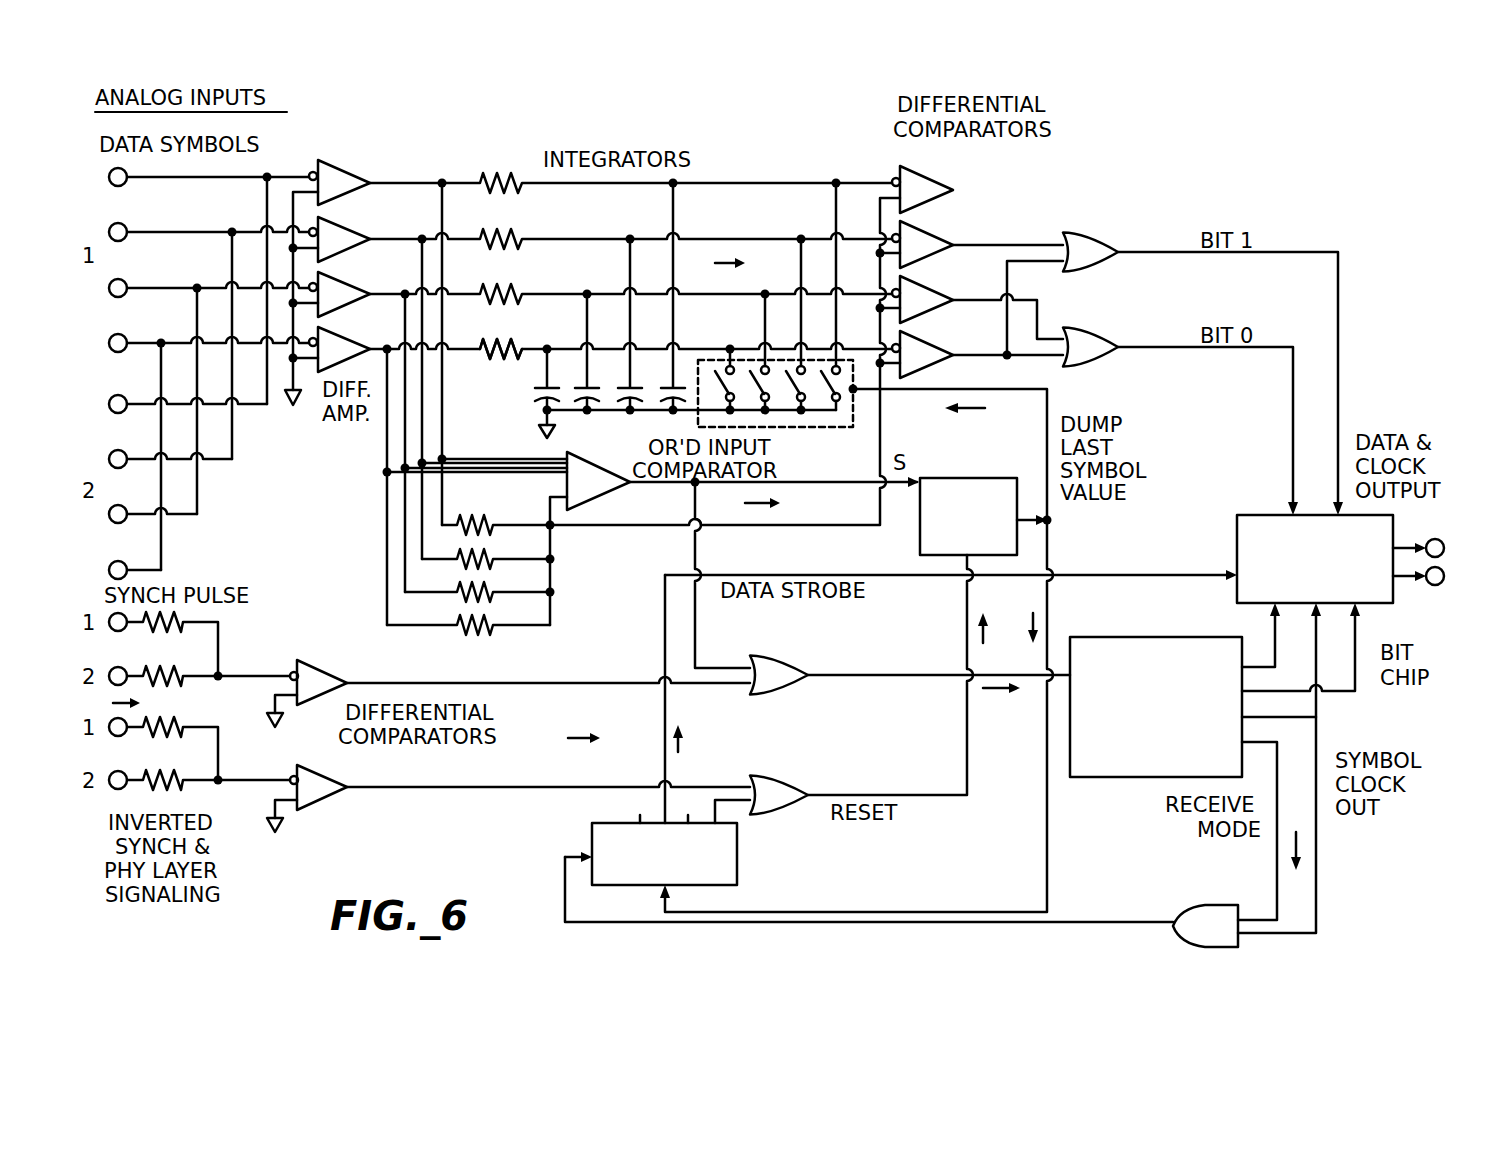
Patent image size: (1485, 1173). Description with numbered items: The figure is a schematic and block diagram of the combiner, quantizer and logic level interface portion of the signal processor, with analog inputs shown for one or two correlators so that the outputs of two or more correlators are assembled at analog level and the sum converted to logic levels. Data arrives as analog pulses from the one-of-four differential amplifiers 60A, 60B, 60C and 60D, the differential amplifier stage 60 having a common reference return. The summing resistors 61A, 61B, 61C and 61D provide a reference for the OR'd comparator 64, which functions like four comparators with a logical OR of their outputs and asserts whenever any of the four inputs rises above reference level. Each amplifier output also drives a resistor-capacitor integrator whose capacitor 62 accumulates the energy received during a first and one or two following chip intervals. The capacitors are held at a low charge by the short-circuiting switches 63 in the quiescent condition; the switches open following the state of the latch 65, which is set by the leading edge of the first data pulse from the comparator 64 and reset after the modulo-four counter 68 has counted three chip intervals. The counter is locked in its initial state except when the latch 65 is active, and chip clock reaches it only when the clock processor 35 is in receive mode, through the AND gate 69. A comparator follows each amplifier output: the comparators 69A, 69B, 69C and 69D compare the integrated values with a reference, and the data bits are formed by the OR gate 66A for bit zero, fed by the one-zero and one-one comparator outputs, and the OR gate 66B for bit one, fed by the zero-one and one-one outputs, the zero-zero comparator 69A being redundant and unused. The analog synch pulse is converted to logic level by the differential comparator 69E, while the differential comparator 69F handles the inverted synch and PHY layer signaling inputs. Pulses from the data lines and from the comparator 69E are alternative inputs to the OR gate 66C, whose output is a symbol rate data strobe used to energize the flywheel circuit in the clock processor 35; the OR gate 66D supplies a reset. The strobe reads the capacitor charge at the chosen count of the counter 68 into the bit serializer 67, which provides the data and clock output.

The clock processor 35 is at (1120, 637).
The differential amplifier 60 is at (300, 410).
The differential amplifier 60A is at (343, 164).
The differential amplifier 60B is at (343, 219).
The differential amplifier 60C is at (343, 274).
The differential amplifier 60D is at (343, 329).
The summing resistor 61A is at (510, 361).
The summing resistor 61B is at (483, 554).
The summing resistor 61C is at (483, 587).
The summing resistor 61D is at (483, 620).
The capacitor 62 is at (535, 398).
The switches 63 is at (823, 427).
The OR'd comparator 64 is at (580, 455).
The latch 65 is at (986, 476).
The OR gate 66A is at (1103, 330).
The OR gate 66B is at (1103, 235).
The OR gate 66C is at (791, 658).
The OR gate 66D is at (791, 778).
The bit serializer 67 is at (1252, 514).
The modulo 4 counter 68 is at (600, 823).
The AND gate 69 is at (1190, 910).
The comparator 69A is at (925, 170).
The comparator 69B is at (925, 225).
The comparator 69C is at (925, 280).
The comparator 69D is at (925, 335).
The differential comparator 69E is at (325, 672).
The differential comparator 69F is at (325, 777).